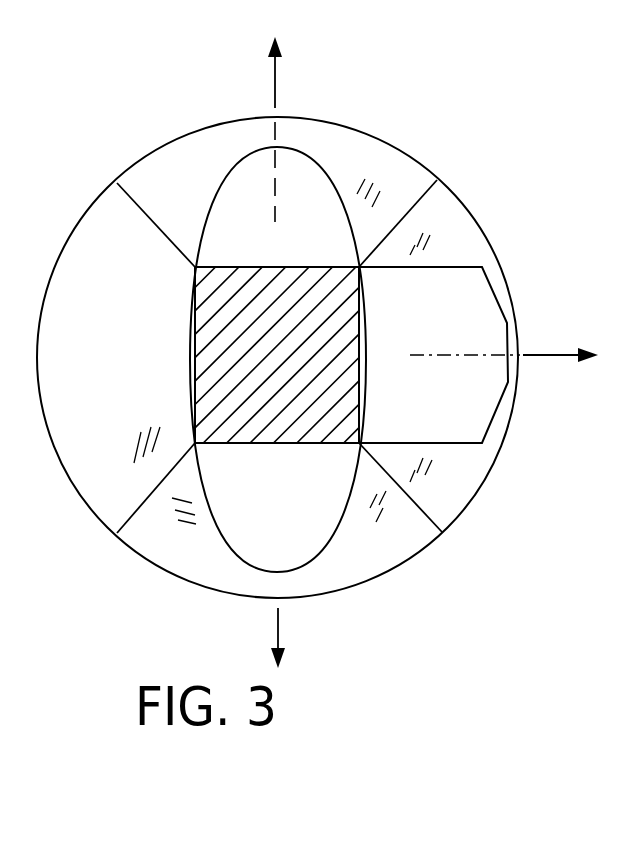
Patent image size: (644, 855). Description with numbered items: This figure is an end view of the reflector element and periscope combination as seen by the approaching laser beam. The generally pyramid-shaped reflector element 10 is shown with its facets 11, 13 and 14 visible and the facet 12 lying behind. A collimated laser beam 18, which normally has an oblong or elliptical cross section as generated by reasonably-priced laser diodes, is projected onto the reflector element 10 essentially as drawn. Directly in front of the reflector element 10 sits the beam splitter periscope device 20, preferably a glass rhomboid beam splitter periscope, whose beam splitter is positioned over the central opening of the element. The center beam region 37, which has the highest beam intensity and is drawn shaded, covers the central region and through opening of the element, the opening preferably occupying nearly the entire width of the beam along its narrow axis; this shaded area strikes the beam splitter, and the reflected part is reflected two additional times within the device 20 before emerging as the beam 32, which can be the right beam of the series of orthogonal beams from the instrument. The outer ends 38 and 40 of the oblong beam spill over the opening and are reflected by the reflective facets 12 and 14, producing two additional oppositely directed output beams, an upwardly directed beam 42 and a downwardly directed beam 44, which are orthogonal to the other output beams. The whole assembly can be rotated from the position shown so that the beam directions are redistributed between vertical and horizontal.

The pyramid-shaped reflector element 10 is at (512, 438).
The facet 11 is at (158, 384).
The facet 12 is at (415, 190).
The facet 13 is at (454, 242).
The facet 14 is at (375, 569).
The collimated laser beam 18 is at (327, 172).
The beam splitter periscope device 20 is at (451, 266).
The beam 32 is at (557, 355).
The center beam region 37 is at (283, 353).
The outer end of the oblong beam 38 is at (267, 237).
The outer end of the oblong beam 40 is at (297, 497).
The upwardly directed beam 42 is at (276, 84).
The downwardly directed beam 44 is at (280, 633).